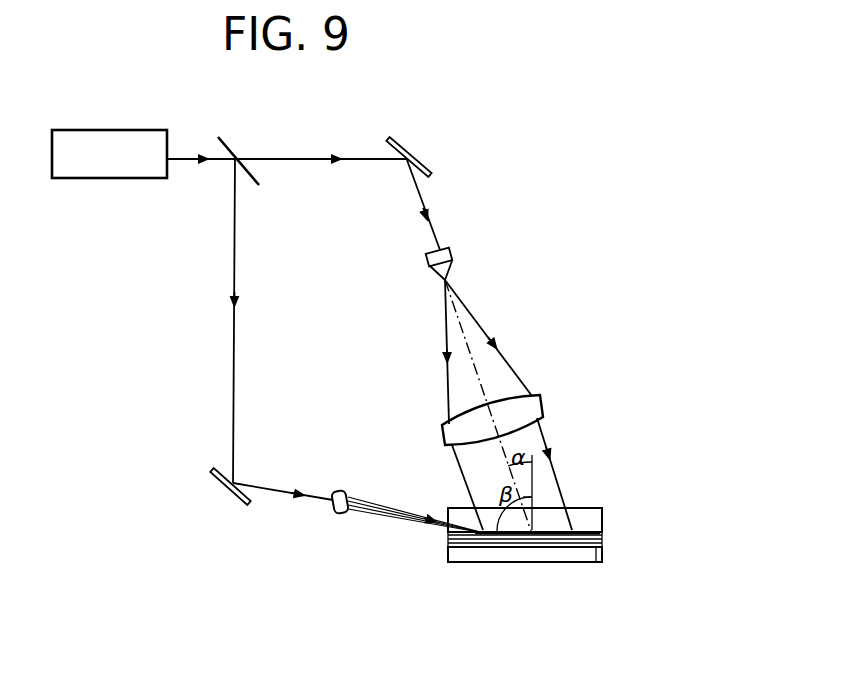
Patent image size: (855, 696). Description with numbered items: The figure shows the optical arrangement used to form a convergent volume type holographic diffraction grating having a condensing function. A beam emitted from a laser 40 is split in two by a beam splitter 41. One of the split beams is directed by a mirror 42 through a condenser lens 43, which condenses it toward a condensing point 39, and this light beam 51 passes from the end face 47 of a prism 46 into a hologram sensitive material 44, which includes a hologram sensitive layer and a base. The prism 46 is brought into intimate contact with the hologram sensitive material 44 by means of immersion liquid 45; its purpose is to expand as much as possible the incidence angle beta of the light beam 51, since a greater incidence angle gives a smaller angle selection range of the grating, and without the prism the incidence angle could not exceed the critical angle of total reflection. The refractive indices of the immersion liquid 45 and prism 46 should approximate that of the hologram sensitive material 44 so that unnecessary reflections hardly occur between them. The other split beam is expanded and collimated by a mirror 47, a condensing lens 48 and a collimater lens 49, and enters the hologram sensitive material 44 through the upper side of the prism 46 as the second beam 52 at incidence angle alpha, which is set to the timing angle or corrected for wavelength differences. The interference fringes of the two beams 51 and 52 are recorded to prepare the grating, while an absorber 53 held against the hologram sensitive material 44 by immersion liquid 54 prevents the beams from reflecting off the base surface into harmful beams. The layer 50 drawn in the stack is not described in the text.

The laser 40 is at (102, 130).
The beam splitter 41 is at (227, 147).
The mirror 47 is at (408, 152).
The condensing lens 48 is at (452, 248).
The collimater lens 49 is at (535, 397).
The second beam 52 is at (545, 433).
The transparent cover layer 50 is at (580, 508).
The prism 46 is at (602, 510).
The immersion liquid 45 is at (602, 530).
The hologram sensitive material 44 is at (602, 540).
The absorber 53 is at (537, 557).
The immersion liquid 54 is at (590, 558).
The light beam 51 is at (437, 525).
The condensing point 39 is at (388, 513).
The condenser lens 43 is at (340, 492).
The mirror 42 is at (235, 502).